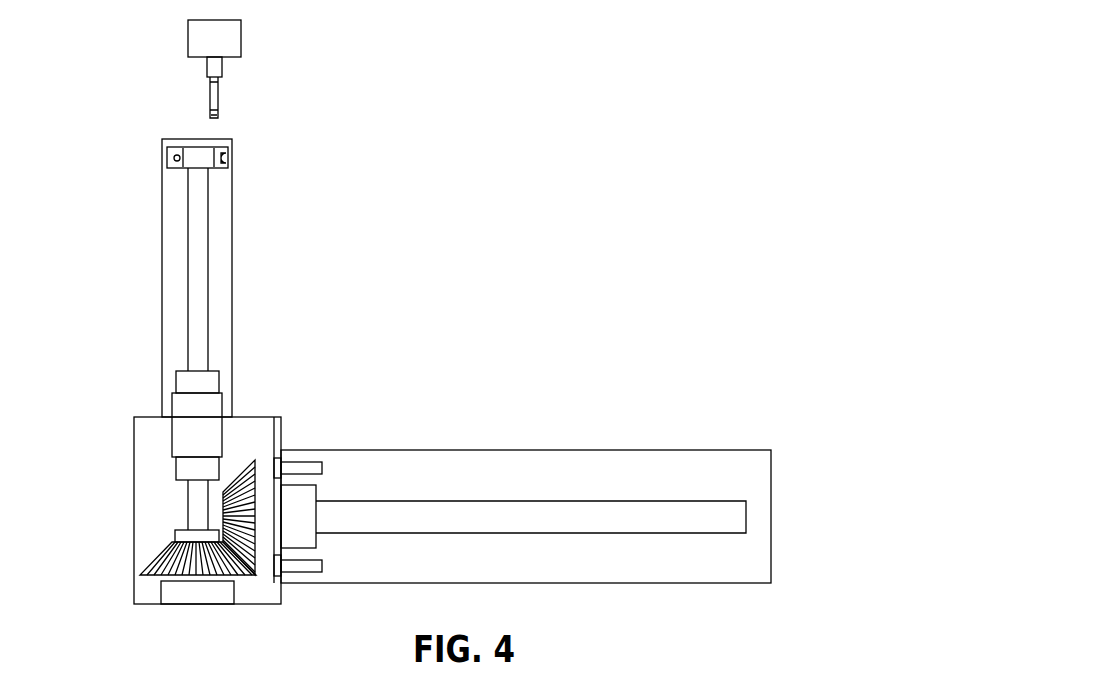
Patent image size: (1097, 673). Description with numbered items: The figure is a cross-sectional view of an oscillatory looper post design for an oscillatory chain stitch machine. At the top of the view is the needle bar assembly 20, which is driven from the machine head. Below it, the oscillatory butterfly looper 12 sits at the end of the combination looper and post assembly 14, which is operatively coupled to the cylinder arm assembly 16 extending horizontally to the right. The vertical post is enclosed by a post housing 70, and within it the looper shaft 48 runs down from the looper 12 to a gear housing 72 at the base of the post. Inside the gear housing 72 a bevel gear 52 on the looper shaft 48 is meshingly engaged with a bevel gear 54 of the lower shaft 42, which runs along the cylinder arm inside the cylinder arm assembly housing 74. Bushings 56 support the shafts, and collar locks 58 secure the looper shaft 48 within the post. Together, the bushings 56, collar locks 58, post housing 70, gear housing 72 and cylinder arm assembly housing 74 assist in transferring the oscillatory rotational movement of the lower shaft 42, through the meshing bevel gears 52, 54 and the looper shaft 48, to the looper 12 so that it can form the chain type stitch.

The needle bar assembly 20 is at (241, 37).
The oscillatory butterfly looper 12 is at (228, 155).
The post housing 70 is at (162, 226).
The combination looper and post assembly 14 is at (105, 333).
The looper shaft 48 is at (197, 278).
The collar locks 58 is at (219, 382).
The bushings 56 is at (172, 437).
The bevel gear 54 is at (220, 464).
The cylinder arm assembly housing 74 is at (436, 450).
The cylinder arm assembly 16 is at (555, 450).
The gear housing 72 is at (134, 507).
The bevel gear 52 is at (197, 522).
The lower shaft 42 is at (609, 518).